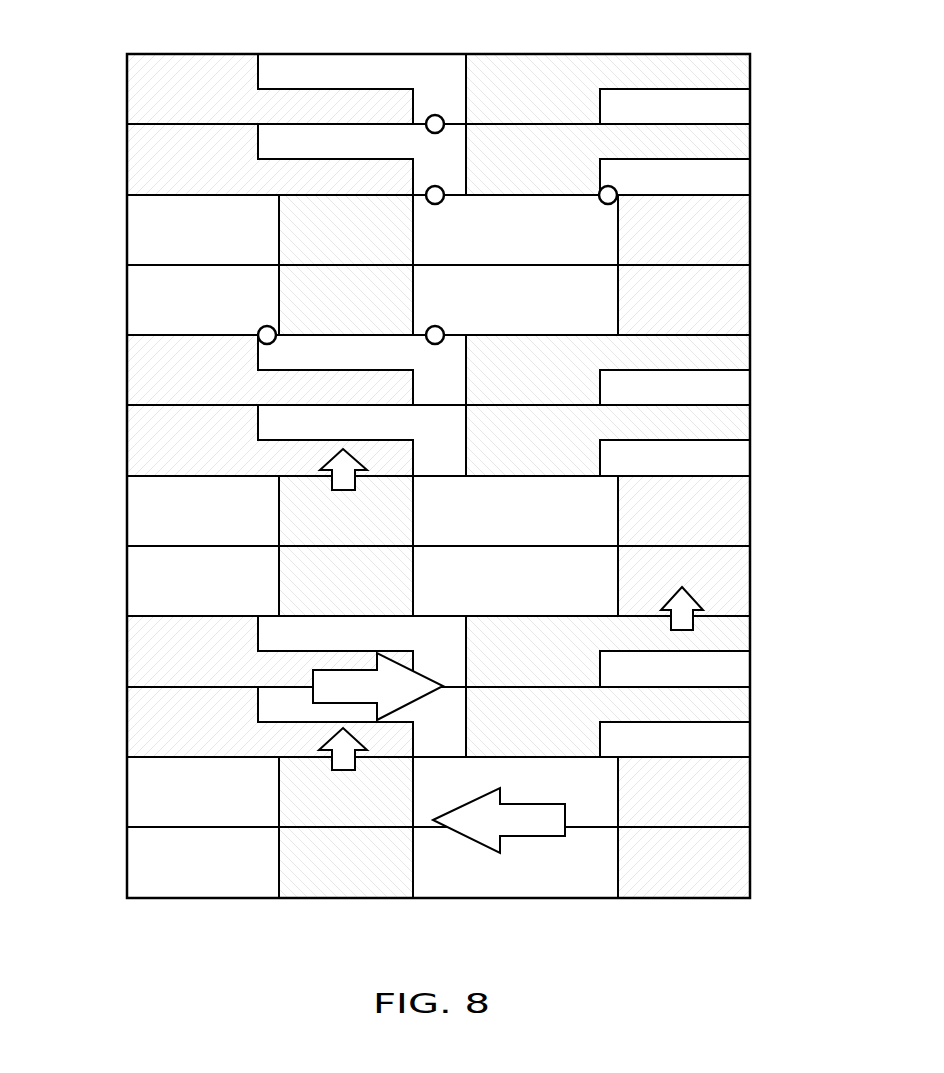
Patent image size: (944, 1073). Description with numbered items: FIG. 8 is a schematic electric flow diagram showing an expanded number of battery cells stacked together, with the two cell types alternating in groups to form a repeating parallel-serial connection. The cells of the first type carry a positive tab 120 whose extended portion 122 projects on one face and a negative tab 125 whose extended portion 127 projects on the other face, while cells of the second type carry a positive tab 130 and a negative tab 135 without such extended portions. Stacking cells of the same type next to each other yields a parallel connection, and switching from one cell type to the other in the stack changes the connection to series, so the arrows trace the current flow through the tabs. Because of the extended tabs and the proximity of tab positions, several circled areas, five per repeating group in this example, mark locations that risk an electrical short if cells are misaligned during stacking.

The positive tab 120 is at (138, 103).
The extended portion 122 is at (378, 96).
The negative tab 125 is at (530, 66).
The extended portion 127 is at (667, 84).
The positive tab 130 is at (745, 217).
The negative tab 135 is at (285, 252).